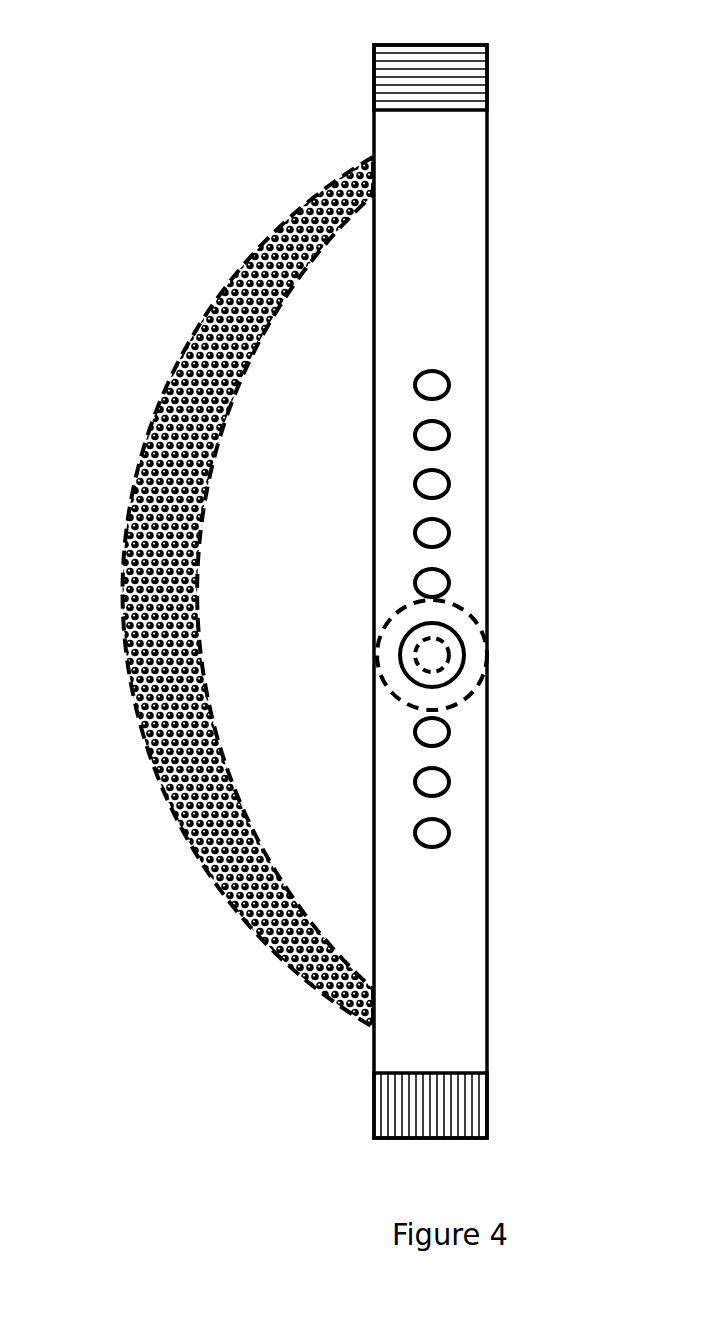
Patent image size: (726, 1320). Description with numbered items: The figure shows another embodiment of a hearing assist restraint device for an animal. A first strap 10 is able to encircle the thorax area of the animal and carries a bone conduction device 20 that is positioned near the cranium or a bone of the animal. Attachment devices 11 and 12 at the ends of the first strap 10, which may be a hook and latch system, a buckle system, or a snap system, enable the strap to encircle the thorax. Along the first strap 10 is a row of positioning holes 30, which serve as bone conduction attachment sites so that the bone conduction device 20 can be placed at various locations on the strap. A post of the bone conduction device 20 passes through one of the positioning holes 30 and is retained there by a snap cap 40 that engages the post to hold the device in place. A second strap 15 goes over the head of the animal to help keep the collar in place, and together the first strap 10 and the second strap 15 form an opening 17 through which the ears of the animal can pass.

The first strap 10 is at (453, 292).
The attachment device 11 is at (442, 80).
The attachment device 12 is at (442, 1107).
The second strap 15 is at (160, 393).
The opening 17 is at (325, 523).
The bone conduction device 20 is at (478, 655).
The positioning holes 30 is at (432, 535).
The snap cap 40 is at (437, 642).